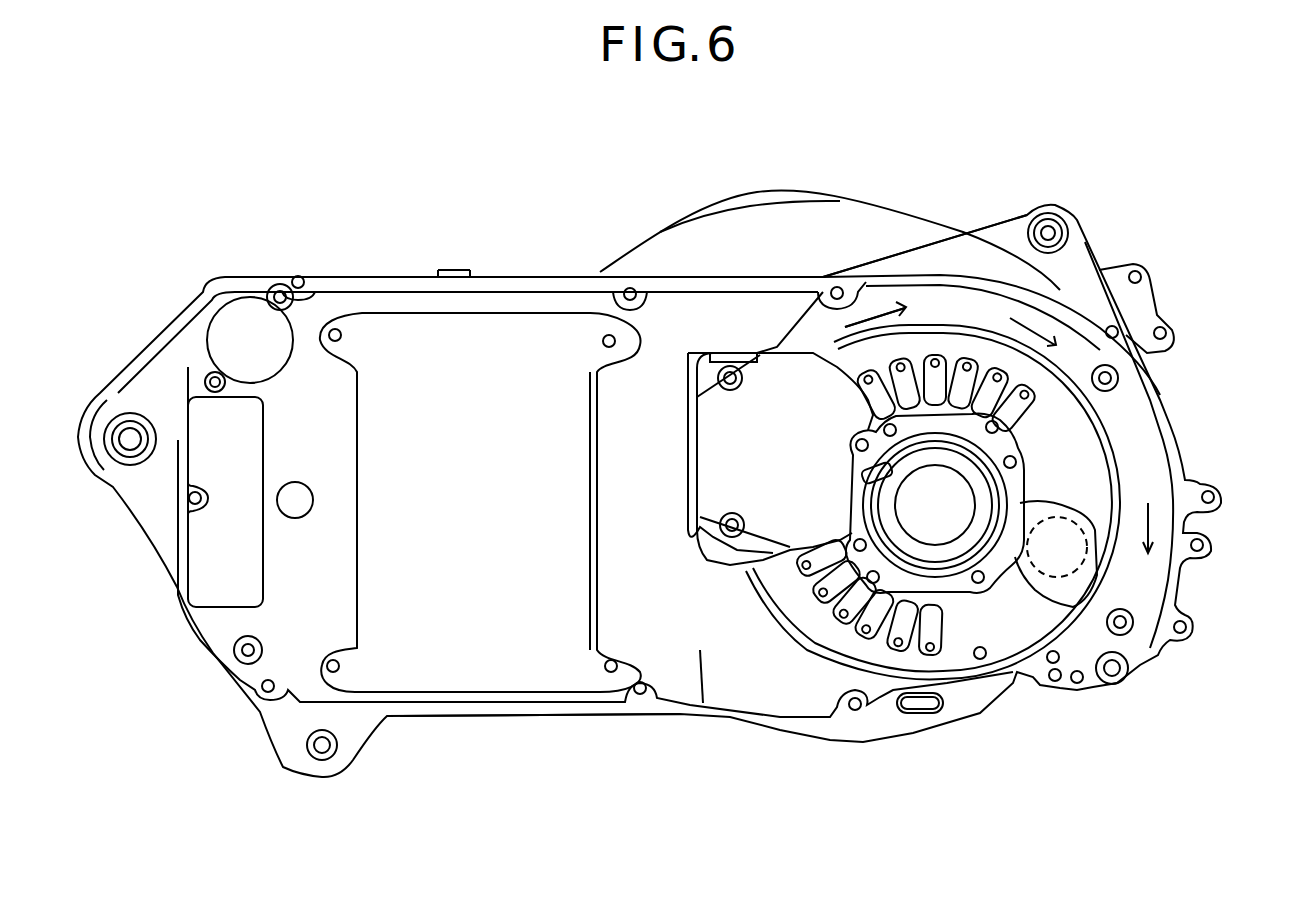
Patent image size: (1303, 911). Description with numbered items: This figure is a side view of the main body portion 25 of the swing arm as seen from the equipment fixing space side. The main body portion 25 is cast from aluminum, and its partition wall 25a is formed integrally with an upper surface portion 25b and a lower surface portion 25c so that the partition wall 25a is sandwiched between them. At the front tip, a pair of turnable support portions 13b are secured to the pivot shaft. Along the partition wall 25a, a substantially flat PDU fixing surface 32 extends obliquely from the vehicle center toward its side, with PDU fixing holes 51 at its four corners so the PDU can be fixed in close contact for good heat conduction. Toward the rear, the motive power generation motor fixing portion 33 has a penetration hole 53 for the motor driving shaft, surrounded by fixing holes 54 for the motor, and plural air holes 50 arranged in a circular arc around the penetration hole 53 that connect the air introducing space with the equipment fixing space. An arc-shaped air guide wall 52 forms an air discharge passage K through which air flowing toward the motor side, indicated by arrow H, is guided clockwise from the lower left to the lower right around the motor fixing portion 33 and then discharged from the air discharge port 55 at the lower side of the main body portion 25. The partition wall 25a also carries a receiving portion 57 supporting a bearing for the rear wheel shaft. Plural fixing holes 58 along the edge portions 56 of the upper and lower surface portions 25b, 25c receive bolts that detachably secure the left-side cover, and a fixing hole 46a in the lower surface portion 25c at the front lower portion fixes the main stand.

The turnable support portion 13b is at (115, 455).
The main body portion 25 is at (1107, 268).
The partition wall 25a is at (695, 665).
The upper surface portion 25b is at (492, 280).
The lower surface portion 25c is at (513, 718).
The PDU fixing surface 32 is at (490, 620).
The motive power generation motor fixing portion 33 is at (950, 592).
The fixing hole for main stand 46a is at (324, 750).
The air holes 50 is at (903, 375).
The PDU fixing holes 51 is at (338, 328).
The air guide wall 52 is at (1155, 313).
The penetration hole 53 is at (968, 502).
The fixing holes for motive power generation motor 54 is at (1020, 398).
The air discharge port 55 is at (1140, 660).
The edge portions 56 is at (412, 280).
The receiving portion 57 is at (1075, 590).
The fixing holes for left-side cover 58 is at (296, 278).
The arrow indicating air flow H is at (877, 295).
The air discharge passage K is at (908, 295).